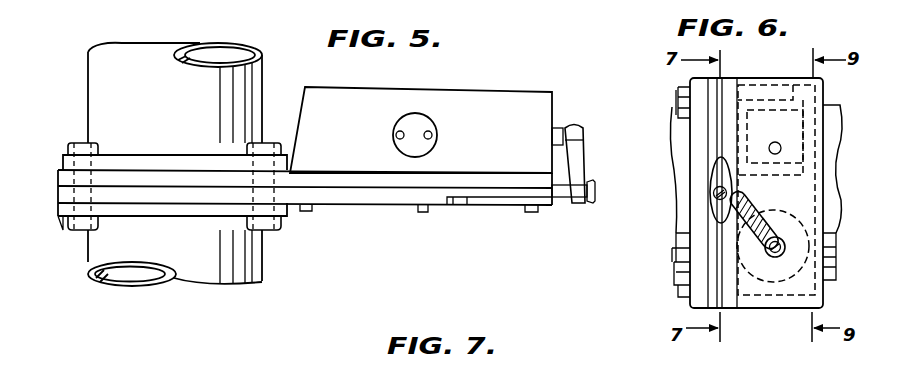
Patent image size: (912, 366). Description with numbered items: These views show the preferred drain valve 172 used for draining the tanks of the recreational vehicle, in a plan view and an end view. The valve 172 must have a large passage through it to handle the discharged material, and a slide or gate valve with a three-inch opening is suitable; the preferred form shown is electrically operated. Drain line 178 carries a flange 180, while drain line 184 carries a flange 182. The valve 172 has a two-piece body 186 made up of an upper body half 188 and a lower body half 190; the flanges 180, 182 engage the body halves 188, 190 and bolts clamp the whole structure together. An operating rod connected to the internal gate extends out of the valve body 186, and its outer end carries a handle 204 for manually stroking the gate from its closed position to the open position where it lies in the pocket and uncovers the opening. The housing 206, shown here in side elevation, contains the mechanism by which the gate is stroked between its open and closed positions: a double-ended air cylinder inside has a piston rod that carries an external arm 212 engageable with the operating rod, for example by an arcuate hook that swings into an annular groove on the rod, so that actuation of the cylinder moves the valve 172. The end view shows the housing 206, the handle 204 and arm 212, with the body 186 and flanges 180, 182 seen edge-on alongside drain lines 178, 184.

In FIG. 5, the valve 172 is at (403, 230).
In FIG. 6, the valve 172 is at (665, 271).
In FIG. 7, the valve 172 is at (312, 365).
In FIG. 5, the drain line 178 is at (110, 82).
In FIG. 5, the flange 180 is at (66, 161).
In FIG. 5, the flange 182 is at (107, 253).
In FIG. 6, the flange 182 is at (680, 221).
In FIG. 5, the drain line 184 is at (67, 207).
In FIG. 6, the drain line 184 is at (687, 249).
In FIG. 5, the two-piece body 186 is at (333, 212).
In FIG. 6, the two-piece body 186 is at (711, 288).
In FIG. 5, the upper body half 188 is at (350, 184).
In FIG. 5, the lower body half 190 is at (405, 198).
In FIG. 5, the handle 204 is at (590, 182).
In FIG. 6, the handle 204 is at (718, 174).
In FIG. 5, the housing 206 is at (462, 95).
In FIG. 6, the housing 206 is at (797, 309).
In FIG. 5, the external arm 212 is at (568, 127).
In FIG. 6, the external arm 212 is at (748, 206).